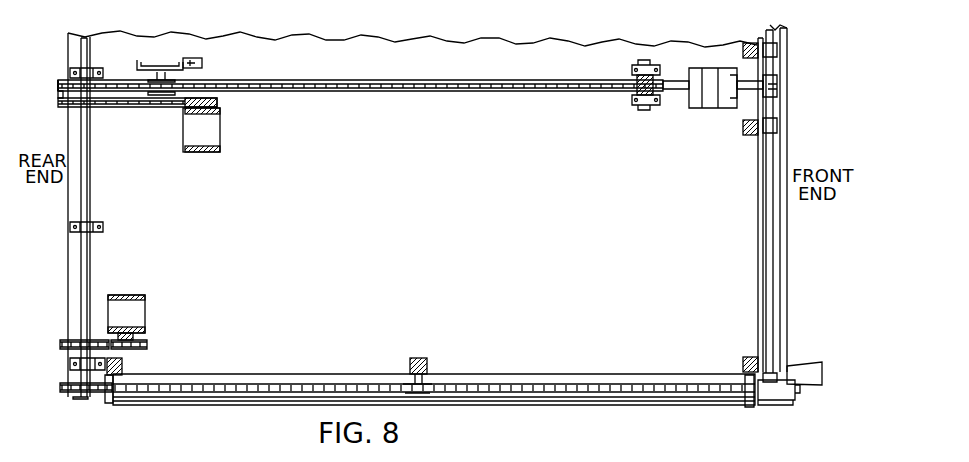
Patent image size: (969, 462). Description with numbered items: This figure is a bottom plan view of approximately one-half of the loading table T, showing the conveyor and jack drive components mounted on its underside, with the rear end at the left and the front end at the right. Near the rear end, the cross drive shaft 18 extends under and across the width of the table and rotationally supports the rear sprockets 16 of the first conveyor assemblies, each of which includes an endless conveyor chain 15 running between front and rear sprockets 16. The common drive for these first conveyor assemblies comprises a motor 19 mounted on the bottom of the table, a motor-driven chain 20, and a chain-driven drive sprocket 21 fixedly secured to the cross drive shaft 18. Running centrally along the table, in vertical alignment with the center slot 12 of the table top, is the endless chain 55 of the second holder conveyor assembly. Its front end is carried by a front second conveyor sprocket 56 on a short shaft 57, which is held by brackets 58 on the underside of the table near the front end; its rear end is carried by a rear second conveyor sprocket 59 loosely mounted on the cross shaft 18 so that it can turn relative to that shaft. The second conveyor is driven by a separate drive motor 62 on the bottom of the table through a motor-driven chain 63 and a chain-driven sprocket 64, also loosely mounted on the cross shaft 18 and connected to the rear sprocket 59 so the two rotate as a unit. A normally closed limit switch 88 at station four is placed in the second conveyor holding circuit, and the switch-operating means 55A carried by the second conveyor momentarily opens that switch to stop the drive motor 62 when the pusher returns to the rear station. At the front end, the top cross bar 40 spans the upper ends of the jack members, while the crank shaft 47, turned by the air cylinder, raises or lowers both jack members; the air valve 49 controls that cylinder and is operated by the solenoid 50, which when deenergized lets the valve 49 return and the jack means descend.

The loading table T is at (479, 35).
The center slot 12 is at (677, 82).
The endless conveyor chain 15 is at (208, 385).
The front and rear sprockets 16 is at (63, 382).
The cross drive shaft 18 is at (88, 54).
The motor 19 is at (135, 310).
The motor-driven chain 20 is at (147, 343).
The chain-driven drive sprocket 21 is at (63, 338).
The top cross bar 40 is at (781, 312).
The crank shaft 47 is at (770, 292).
The air valve 49 is at (725, 100).
The solenoid 50 is at (698, 95).
The endless chain 55 is at (388, 86).
The switch-operating means 55A is at (208, 80).
The front second conveyor sprocket 56 is at (627, 90).
The short shaft 57 is at (655, 106).
The brackets 58 is at (633, 68).
The rear second conveyor sprocket 59 is at (63, 79).
The drive motor 62 is at (195, 133).
The motor-driven chain 63 is at (162, 100).
The chain-driven sprocket 64 is at (65, 108).
The normally closed limit switch 88 is at (202, 62).